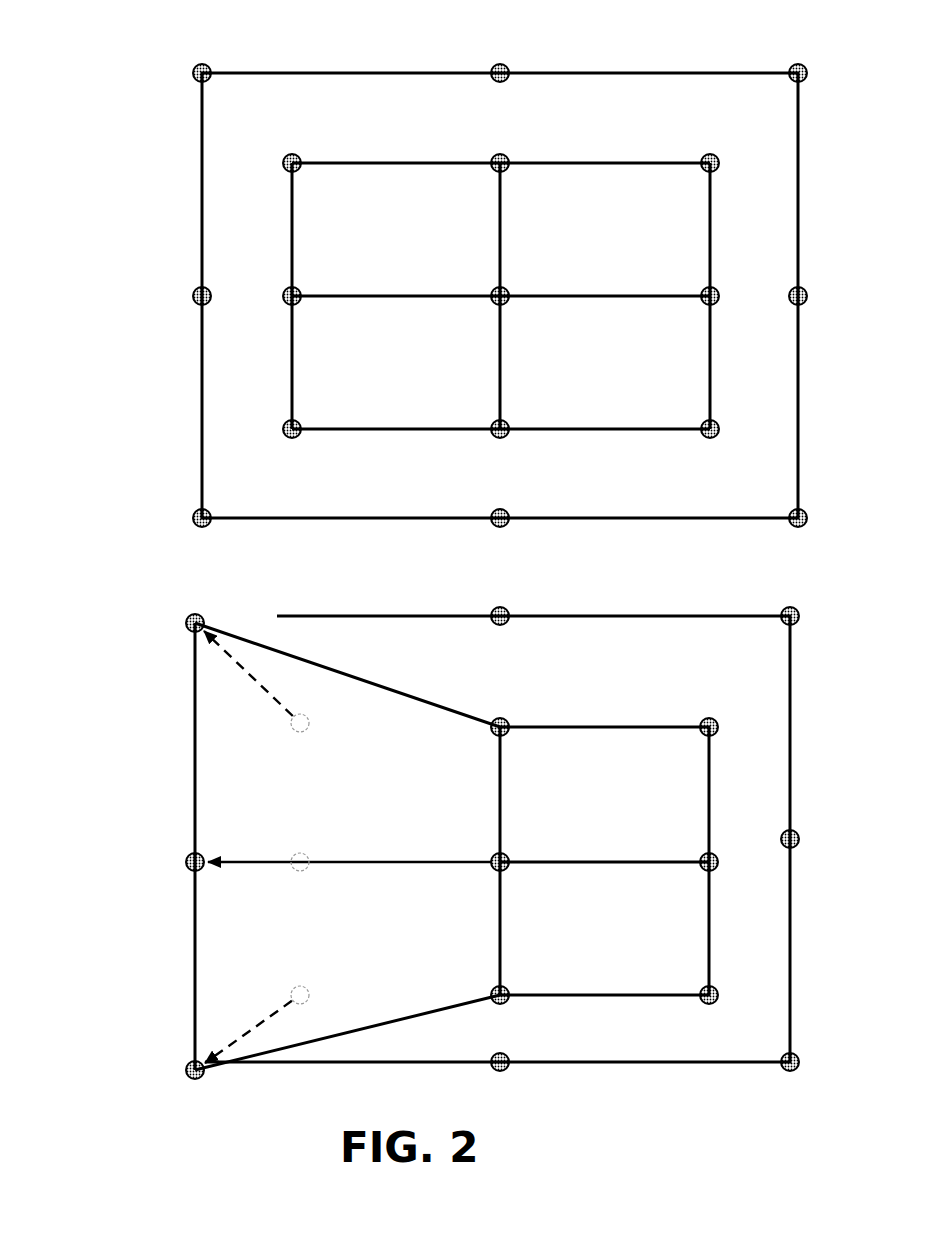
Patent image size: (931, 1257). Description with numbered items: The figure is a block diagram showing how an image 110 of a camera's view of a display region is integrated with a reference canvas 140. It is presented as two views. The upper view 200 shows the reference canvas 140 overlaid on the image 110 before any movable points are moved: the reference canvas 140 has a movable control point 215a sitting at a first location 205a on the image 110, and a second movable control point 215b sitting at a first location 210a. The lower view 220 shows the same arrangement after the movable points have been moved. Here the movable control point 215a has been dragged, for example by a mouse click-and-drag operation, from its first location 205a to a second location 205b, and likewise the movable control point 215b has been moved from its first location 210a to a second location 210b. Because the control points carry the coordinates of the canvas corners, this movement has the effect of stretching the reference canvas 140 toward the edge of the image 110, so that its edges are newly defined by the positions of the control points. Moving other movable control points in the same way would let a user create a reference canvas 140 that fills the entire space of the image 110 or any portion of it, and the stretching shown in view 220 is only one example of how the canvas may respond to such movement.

The view before movement of movable points 200 is at (306, 59).
The view after movement of movable points 220 is at (437, 612).
The image 110 is at (496, 567).
The reference canvas 140 is at (463, 579).
The movable control point 215a is at (303, 147).
The movable control point 215b is at (303, 401).
The first location of movable control point 215a 205a is at (284, 160).
The second location of movable control point 215a 205b is at (190, 629).
The first location of movable control point 215b 210a is at (292, 995).
The second location of movable control point 215b 210b is at (190, 1077).